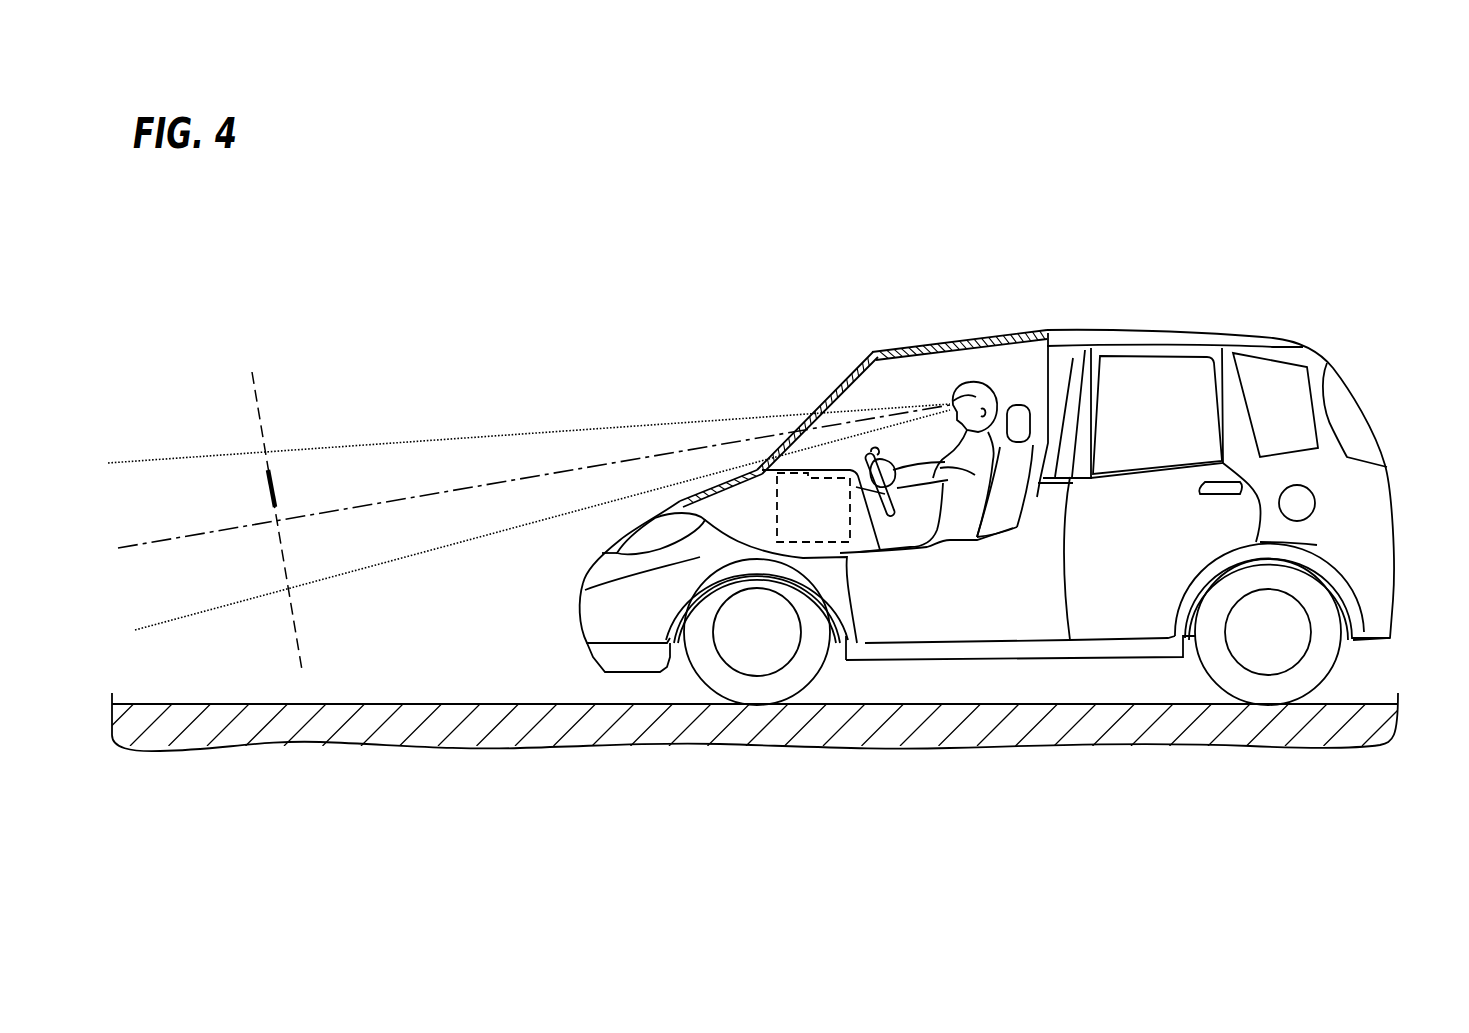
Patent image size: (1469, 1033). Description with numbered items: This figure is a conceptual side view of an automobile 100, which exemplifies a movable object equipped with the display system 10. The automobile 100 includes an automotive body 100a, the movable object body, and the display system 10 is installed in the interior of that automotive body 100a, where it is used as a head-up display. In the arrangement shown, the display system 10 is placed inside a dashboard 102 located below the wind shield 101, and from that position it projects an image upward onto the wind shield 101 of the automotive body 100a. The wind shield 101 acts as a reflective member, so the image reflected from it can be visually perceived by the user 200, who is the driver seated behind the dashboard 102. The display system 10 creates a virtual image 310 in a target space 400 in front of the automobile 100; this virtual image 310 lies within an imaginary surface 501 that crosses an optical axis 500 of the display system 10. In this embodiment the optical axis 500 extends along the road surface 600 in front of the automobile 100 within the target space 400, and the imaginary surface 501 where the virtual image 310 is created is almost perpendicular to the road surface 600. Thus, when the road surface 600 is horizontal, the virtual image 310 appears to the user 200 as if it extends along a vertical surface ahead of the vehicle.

The display system 10 is at (850, 519).
The automobile 100 is at (1022, 491).
The automotive body 100a is at (1375, 508).
The wind shield 101 is at (823, 400).
The dashboard 102 is at (862, 550).
The user 200 is at (985, 398).
The virtual image 310 is at (272, 472).
The target space 400 is at (560, 430).
The optical axis 500 is at (152, 542).
The imaginary surface 501 is at (253, 380).
The road surface 600 is at (450, 703).